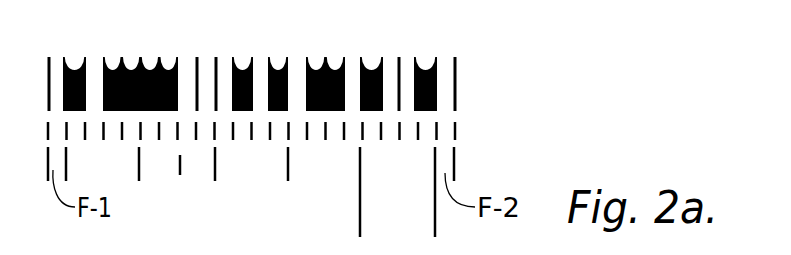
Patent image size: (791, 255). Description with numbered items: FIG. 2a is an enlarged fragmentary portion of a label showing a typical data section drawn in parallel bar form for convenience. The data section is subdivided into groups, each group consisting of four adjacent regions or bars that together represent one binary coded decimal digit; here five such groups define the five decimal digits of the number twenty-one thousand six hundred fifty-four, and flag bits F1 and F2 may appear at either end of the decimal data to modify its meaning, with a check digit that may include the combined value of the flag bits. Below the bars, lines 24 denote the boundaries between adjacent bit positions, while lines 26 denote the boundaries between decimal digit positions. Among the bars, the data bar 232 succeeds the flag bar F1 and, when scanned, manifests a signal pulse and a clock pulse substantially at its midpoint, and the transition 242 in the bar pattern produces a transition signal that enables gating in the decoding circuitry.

The data bar 232 is at (75, 67).
The transition 242 is at (103, 57).
The lines denoting boundaries between adjacent bit positions 24 is at (455, 134).
The lines denoting boundaries between decimal digit positions 26 is at (456, 176).